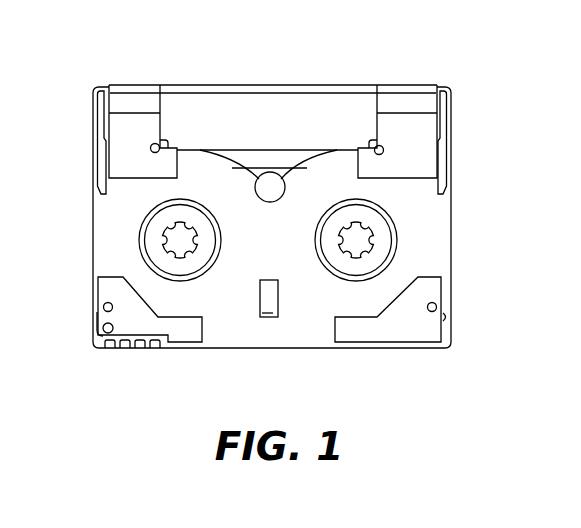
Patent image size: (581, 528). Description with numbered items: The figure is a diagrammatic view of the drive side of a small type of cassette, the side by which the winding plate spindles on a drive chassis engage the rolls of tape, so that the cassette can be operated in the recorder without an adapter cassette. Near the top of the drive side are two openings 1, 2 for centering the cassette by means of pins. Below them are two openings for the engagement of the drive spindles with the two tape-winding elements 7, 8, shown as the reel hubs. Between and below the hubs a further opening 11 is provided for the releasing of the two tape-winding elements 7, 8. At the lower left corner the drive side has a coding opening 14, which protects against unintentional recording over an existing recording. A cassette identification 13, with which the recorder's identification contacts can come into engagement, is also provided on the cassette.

The opening 1 is at (155, 144).
The opening 2 is at (380, 146).
The tape-winding element 7 is at (155, 232).
The tape-winding element 8 is at (368, 229).
The further opening 11 is at (268, 302).
The cassette identification 13 is at (125, 350).
The coding opening 14 is at (100, 332).